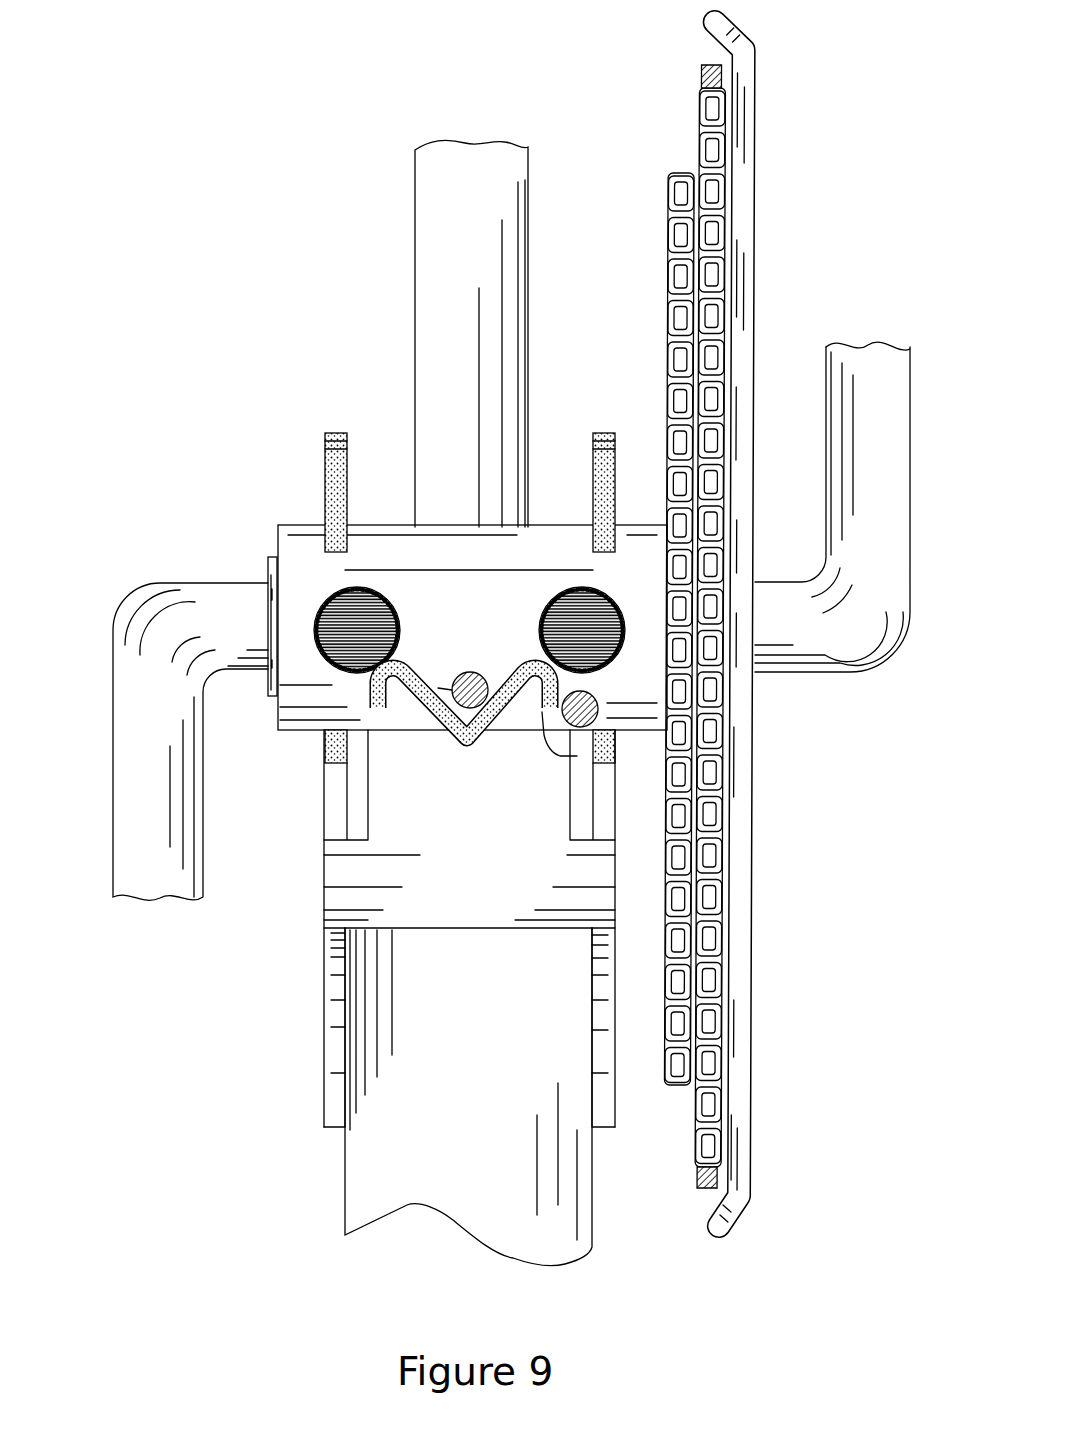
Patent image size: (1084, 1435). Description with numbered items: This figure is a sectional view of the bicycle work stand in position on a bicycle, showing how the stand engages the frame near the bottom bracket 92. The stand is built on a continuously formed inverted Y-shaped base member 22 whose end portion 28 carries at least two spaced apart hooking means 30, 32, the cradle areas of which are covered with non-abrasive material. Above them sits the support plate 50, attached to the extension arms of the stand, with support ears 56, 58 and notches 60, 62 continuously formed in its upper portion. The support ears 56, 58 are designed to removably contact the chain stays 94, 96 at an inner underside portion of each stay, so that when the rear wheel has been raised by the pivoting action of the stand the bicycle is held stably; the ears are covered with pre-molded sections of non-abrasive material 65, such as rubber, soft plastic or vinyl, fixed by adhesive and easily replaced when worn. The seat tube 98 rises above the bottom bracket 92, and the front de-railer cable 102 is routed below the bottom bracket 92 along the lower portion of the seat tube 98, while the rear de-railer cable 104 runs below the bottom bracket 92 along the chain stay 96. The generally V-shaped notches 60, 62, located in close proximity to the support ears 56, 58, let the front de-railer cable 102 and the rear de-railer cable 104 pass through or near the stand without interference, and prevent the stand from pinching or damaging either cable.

The inverted Y-shaped base member 22 is at (345, 1212).
The end portion 28 is at (488, 1031).
The hooking means 30 is at (284, 526).
The hooking means 32 is at (610, 417).
The support plate 50 is at (407, 930).
The support ear 56 is at (413, 698).
The support ear 58 is at (537, 683).
The notch 60 is at (457, 748).
The notch 62 is at (575, 745).
The non-abrasive material 65 is at (482, 738).
The bottom bracket 92 is at (338, 417).
The chain stay 94 is at (326, 593).
The chain stay 96 is at (570, 588).
The seat tube 98 is at (430, 213).
The front de-railer cable 102 is at (393, 692).
The rear de-railer cable 104 is at (598, 710).